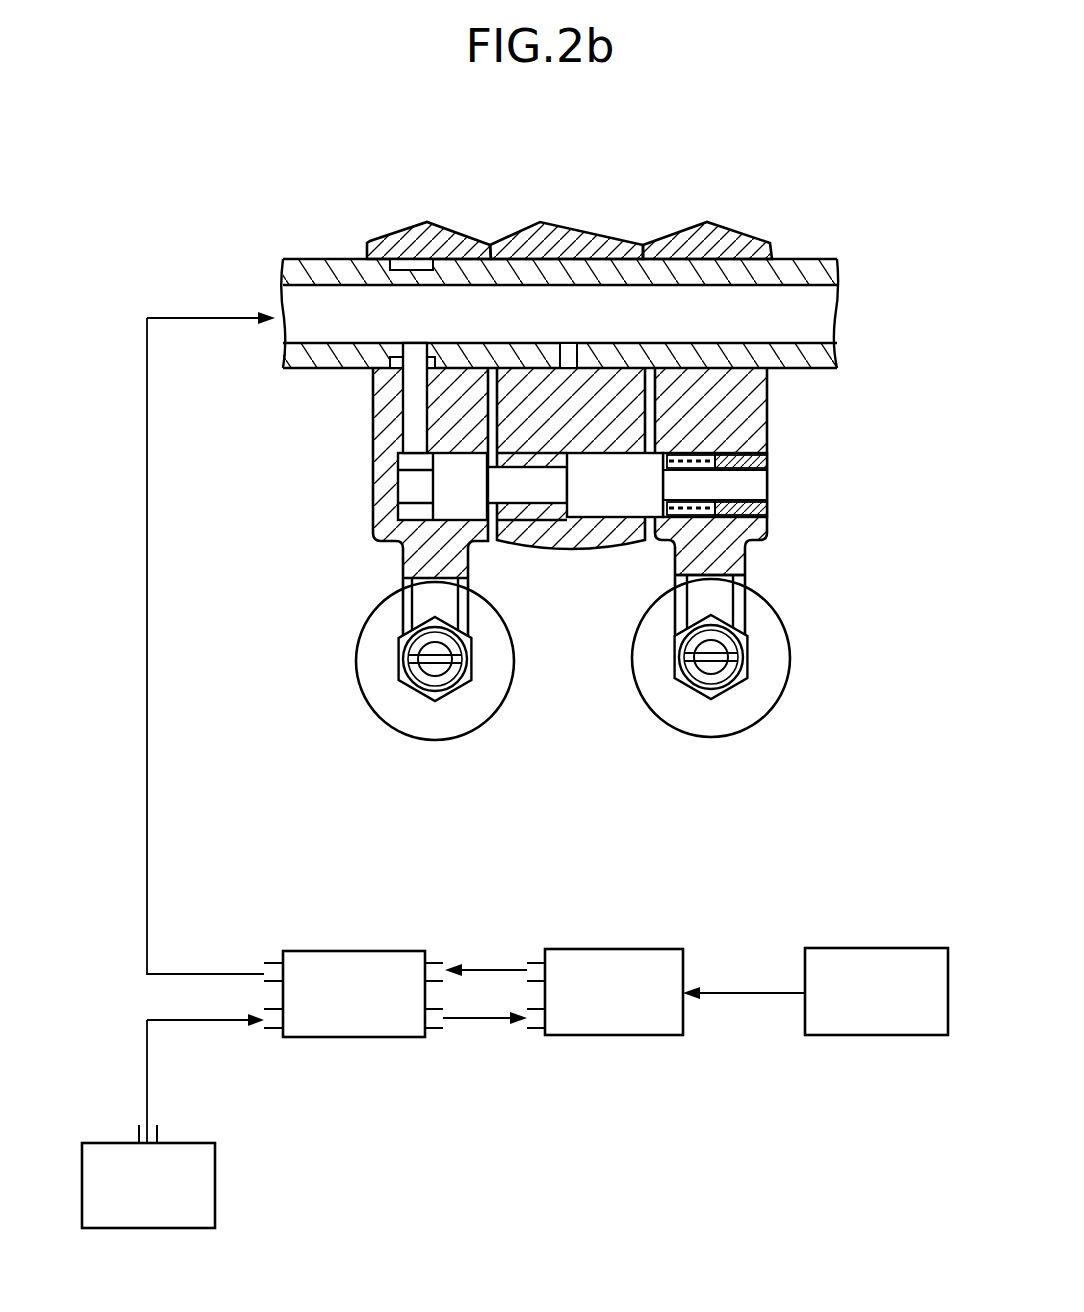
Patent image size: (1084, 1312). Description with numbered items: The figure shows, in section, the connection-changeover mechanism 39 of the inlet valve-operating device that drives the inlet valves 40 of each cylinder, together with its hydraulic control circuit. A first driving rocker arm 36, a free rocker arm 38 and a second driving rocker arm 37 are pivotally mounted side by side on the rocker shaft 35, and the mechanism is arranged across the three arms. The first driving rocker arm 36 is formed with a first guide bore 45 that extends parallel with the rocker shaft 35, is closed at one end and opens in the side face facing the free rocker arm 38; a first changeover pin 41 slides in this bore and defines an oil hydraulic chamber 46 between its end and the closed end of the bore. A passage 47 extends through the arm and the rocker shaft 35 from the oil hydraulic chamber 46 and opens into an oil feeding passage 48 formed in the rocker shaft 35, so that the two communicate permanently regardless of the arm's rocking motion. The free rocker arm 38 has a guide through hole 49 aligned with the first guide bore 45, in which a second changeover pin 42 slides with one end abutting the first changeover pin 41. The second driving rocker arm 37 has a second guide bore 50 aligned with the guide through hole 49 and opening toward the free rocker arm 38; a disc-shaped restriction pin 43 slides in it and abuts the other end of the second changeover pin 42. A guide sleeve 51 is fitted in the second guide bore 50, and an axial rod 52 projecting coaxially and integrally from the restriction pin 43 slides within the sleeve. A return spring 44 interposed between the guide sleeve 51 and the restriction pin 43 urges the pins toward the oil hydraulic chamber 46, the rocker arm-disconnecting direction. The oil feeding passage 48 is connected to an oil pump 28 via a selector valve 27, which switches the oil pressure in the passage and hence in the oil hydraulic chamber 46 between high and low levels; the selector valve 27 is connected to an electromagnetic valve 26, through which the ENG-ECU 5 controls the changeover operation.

The ENG-ECU 5 is at (876, 948).
The electromagnetic valve 26 is at (622, 949).
The selector valve 27 is at (378, 951).
The oil pump 28 is at (188, 1143).
The rocker shaft 35 is at (310, 262).
The first driving rocker arm 36 is at (400, 233).
The second driving rocker arm 37 is at (741, 240).
The free rocker arm 38 is at (545, 229).
The connection-changeover mechanism 39 is at (598, 530).
The inlet valve 40 is at (350, 608).
The first changeover pin 41 is at (470, 514).
The second changeover pin 42 is at (625, 512).
The restriction pin 43 is at (650, 484).
The return spring 44 is at (752, 547).
The first guide bore 45 is at (402, 473).
The oil hydraulic chamber 46 is at (405, 511).
The passage 47 is at (410, 402).
The oil feeding passage 48 is at (312, 336).
The guide through hole 49 is at (552, 520).
The second guide bore 50 is at (700, 522).
The guide sleeve 51 is at (765, 498).
The axial rod 52 is at (740, 480).